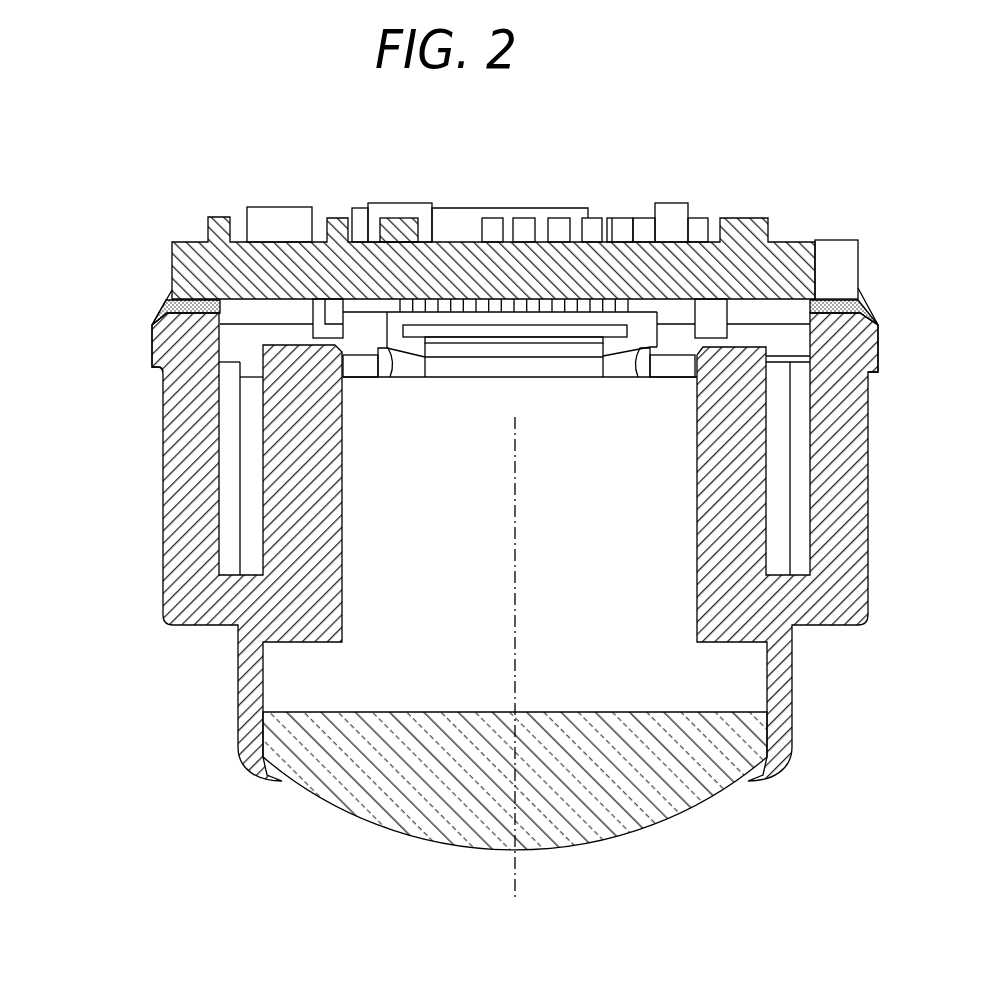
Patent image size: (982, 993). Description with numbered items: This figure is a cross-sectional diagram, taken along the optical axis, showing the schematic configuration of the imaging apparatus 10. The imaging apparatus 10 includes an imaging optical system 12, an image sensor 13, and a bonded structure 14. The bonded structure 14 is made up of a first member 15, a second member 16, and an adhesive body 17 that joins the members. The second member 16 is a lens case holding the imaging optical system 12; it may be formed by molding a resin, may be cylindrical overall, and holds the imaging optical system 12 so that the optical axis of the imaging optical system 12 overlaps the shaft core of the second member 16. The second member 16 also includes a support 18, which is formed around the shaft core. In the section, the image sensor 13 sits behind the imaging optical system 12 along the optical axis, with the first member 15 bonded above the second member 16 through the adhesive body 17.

The imaging apparatus 10 is at (333, 870).
The imaging optical system 12 is at (623, 808).
The image sensor 13 is at (485, 332).
The bonded structure 14 is at (85, 240).
The first member 15 is at (205, 267).
The second member 16 is at (155, 416).
The adhesive body 17 is at (167, 306).
The support 18 is at (185, 527).